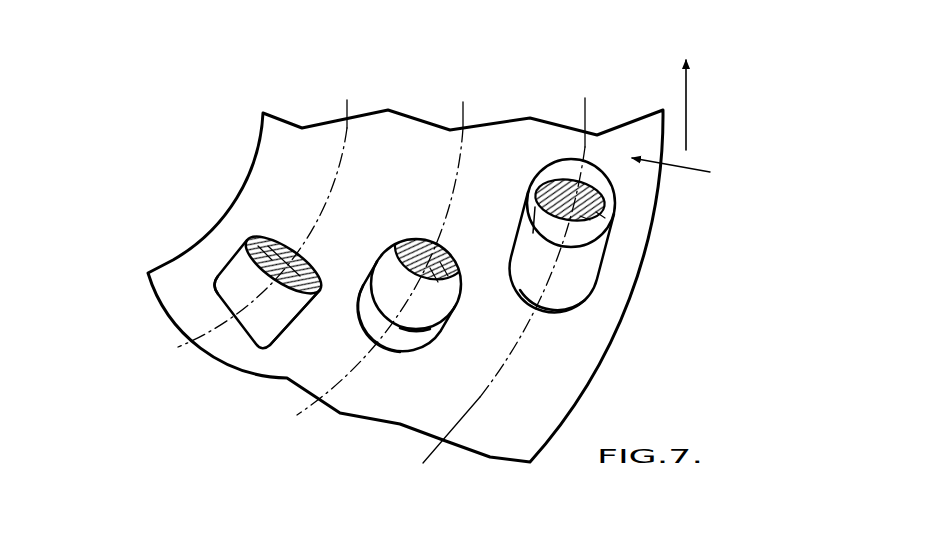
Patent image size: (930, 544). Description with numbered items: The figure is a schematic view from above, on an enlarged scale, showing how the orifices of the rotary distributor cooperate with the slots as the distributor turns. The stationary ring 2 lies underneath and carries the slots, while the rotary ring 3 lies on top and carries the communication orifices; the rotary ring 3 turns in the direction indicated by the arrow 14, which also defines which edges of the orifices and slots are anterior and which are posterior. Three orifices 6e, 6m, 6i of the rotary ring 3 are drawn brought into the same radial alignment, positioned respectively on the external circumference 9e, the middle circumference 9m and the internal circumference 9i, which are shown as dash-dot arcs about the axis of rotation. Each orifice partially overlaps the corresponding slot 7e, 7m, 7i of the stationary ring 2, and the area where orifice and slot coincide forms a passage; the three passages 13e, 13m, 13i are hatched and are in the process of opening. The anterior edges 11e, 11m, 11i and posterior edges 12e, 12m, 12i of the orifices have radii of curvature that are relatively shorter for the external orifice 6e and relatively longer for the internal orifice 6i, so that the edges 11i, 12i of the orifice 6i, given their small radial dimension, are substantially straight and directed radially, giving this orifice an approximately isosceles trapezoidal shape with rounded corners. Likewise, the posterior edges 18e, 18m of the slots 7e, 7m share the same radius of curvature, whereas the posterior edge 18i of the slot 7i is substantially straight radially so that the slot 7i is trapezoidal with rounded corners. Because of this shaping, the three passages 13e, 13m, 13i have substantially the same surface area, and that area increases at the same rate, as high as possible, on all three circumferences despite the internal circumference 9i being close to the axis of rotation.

The stationary ring 2 is at (253, 318).
The rotary ring 3 is at (677, 170).
The direction of rotation arrow 14 is at (708, 105).
The orifice on internal circumference 6i is at (221, 282).
The orifice on middle circumference 6m is at (429, 276).
The orifice on external circumference 6e is at (618, 208).
The slot on internal circumference 7i is at (255, 240).
The slot on middle circumference 7m is at (440, 255).
The slot on external circumference 7e is at (613, 217).
The internal circumference 9i is at (347, 100).
The middle circumference 9m is at (463, 102).
The external circumference 9e is at (585, 98).
The anterior edge of internal orifice 11i is at (268, 245).
The anterior edge of middle orifice 11m is at (420, 300).
The anterior edge of external orifice 11e is at (580, 198).
The posterior edge of internal orifice 12i is at (228, 292).
The posterior edge of middle orifice 12m is at (400, 318).
The posterior edge of external orifice 12e is at (573, 282).
The passage on internal circumference 13i is at (250, 243).
The passage on middle circumference 13m is at (423, 248).
The passage on external circumference 13e is at (558, 195).
The posterior edge of internal slot 18i is at (295, 292).
The posterior edge of middle slot 18m is at (418, 330).
The posterior edge of external slot 18e is at (590, 218).